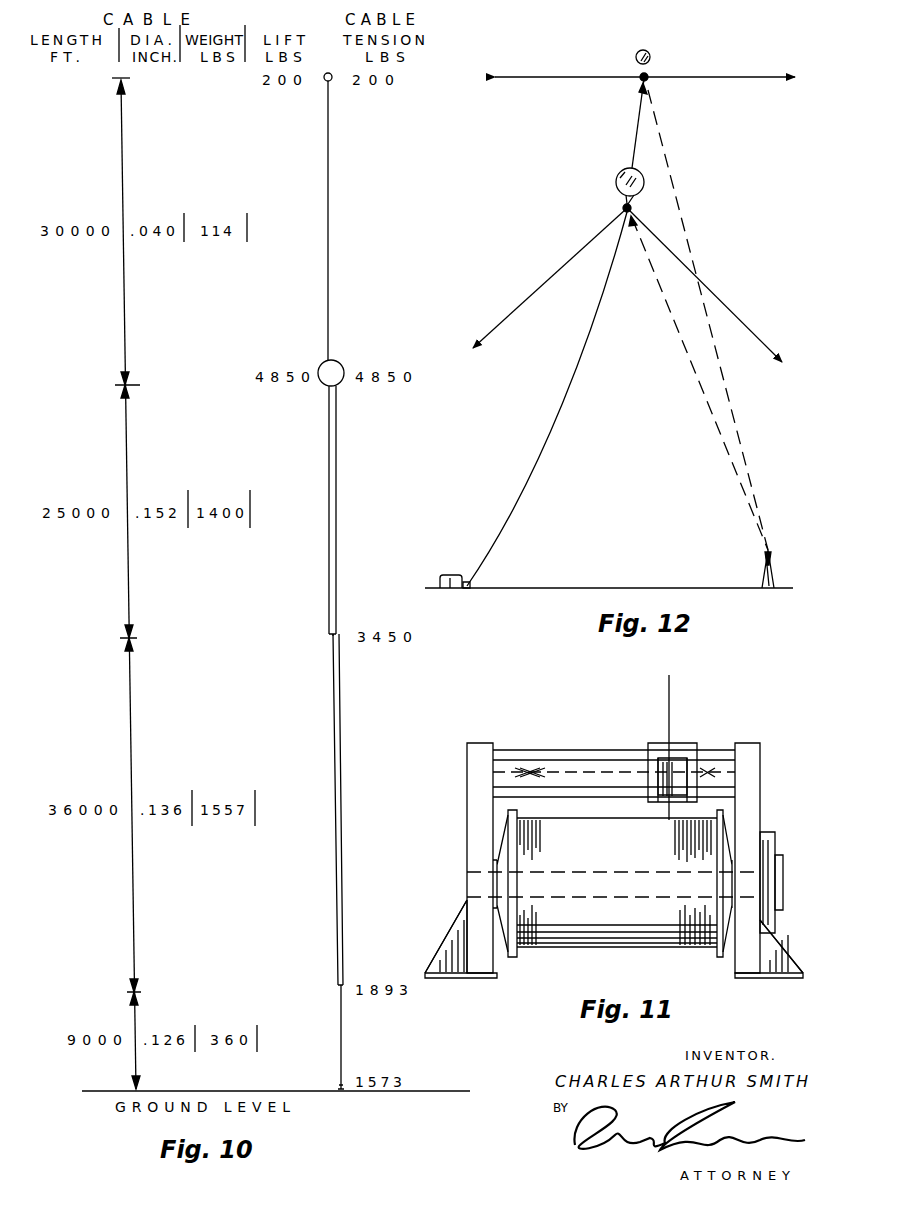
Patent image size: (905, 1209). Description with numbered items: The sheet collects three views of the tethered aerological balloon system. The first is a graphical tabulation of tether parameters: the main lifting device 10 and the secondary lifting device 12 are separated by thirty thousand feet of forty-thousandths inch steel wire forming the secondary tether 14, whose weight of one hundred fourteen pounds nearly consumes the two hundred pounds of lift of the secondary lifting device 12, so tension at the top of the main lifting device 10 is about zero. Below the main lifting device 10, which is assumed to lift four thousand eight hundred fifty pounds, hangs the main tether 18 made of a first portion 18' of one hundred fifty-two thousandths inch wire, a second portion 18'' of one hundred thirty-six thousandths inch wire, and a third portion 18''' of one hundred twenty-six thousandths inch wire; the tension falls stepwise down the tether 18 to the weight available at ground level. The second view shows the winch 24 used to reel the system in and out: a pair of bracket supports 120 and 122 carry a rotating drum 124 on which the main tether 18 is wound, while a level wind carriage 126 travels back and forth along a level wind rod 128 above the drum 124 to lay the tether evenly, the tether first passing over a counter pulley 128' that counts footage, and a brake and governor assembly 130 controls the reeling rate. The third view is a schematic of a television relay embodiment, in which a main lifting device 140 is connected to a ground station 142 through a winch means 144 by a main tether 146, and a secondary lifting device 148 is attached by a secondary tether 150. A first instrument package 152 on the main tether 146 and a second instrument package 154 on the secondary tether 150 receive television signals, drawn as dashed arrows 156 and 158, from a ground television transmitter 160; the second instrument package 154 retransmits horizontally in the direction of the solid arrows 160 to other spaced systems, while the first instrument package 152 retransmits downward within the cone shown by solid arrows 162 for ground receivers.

In FIG. 10, the main lifting device 10 is at (340, 363).
In FIG. 10, the secondary lifting device 12 is at (328, 72).
In FIG. 10, the secondary tether 14 is at (330, 175).
In FIG. 10, the main tether 18 is at (361, 510).
In FIG. 11, the main tether 18 is at (686, 744).
In FIG. 10, the first portion 18' is at (353, 576).
In FIG. 10, the second portion 18'' is at (357, 809).
In FIG. 10, the third portion 18''' is at (361, 1037).
In FIG. 11, the winch 24 is at (745, 733).
In FIG. 11, the bracket support 120 is at (750, 962).
In FIG. 11, the bracket support 122 is at (497, 970).
In FIG. 11, the rotating drum 124 is at (519, 952).
In FIG. 11, the level wind carriage 126 is at (657, 742).
In FIG. 11, the level wind rod 128 is at (615, 749).
In FIG. 11, the counter pulley 128' is at (687, 752).
In FIG. 11, the brake and governor assembly 130 is at (774, 846).
In FIG. 12, the main lifting device 140 is at (622, 170).
In FIG. 12, the ground station 142 is at (452, 575).
In FIG. 12, the winch means 144 is at (470, 586).
In FIG. 12, the main tether 146 is at (558, 428).
In FIG. 12, the secondary lifting device 148 is at (646, 49).
In FIG. 12, the secondary tether 150 is at (636, 118).
In FIG. 12, the first instrument package 152 is at (622, 209).
In FIG. 12, the second instrument package 154 is at (650, 75).
In FIG. 12, the television signal 156 is at (668, 155).
In FIG. 12, the television signal 158 is at (672, 340).
In FIG. 12, the television transmitter 160 is at (545, 78).
In FIG. 12, the solid arrows 162 is at (493, 322).